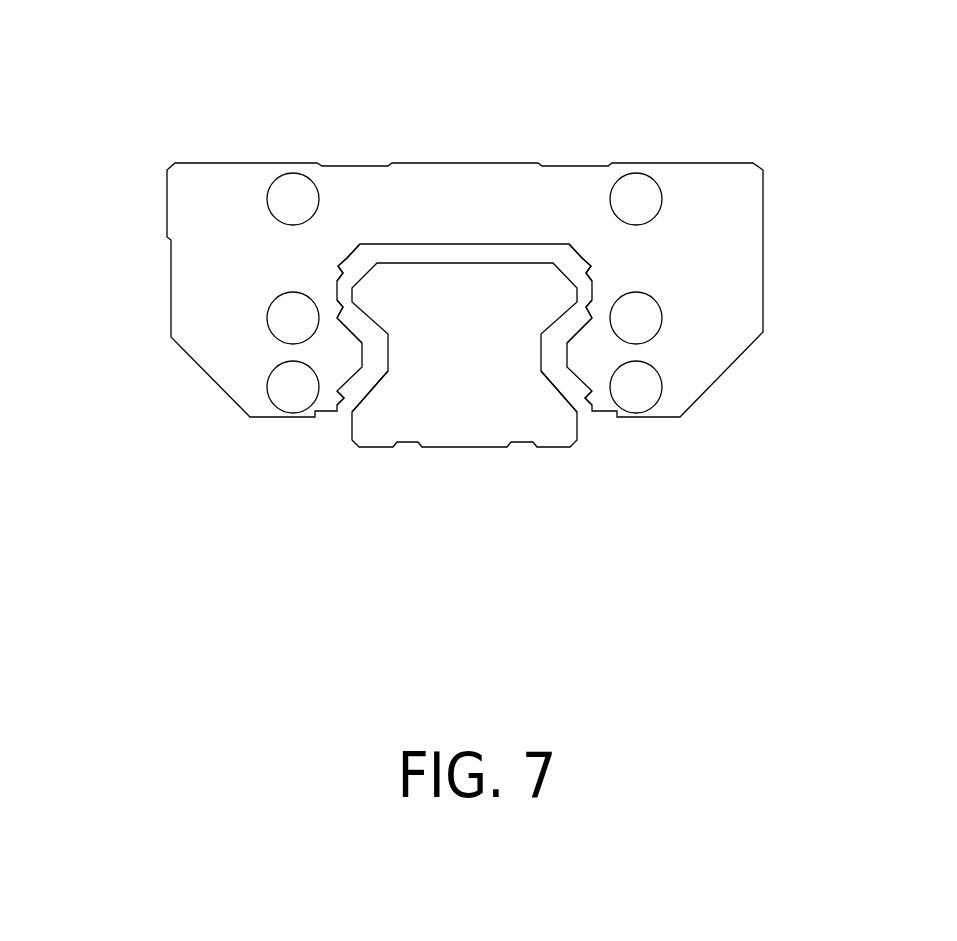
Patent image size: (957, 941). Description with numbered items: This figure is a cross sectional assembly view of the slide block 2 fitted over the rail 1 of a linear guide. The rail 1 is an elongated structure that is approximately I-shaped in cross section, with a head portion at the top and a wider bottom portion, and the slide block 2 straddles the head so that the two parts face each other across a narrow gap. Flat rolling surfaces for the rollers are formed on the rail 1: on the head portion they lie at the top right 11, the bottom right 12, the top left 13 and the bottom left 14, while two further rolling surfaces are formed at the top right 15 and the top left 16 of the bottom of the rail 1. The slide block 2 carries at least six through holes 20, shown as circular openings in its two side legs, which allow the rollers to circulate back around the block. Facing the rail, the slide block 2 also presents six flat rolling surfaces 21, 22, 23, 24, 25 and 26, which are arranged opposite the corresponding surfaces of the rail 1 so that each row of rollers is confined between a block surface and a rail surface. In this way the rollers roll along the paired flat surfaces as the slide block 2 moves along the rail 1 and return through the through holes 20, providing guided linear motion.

The rail 1 is at (465, 383).
The slide block 2 is at (470, 207).
The top right flat rolling surface 11 is at (591, 267).
The bottom right flat rolling surface 12 is at (590, 305).
The top left flat rolling surface 13 is at (338, 267).
The bottom left flat rolling surface 14 is at (339, 305).
The top right flat rolling surface of rail bottom 15 is at (558, 392).
The top left flat rolling surface of rail bottom 16 is at (371, 392).
The through holes 20 is at (638, 187).
The flat rolling surface 21 is at (579, 257).
The flat rolling surface 22 is at (579, 330).
The flat rolling surface 23 is at (350, 257).
The flat rolling surface 24 is at (350, 330).
The flat rolling surface 25 is at (581, 402).
The flat rolling surface 26 is at (348, 402).